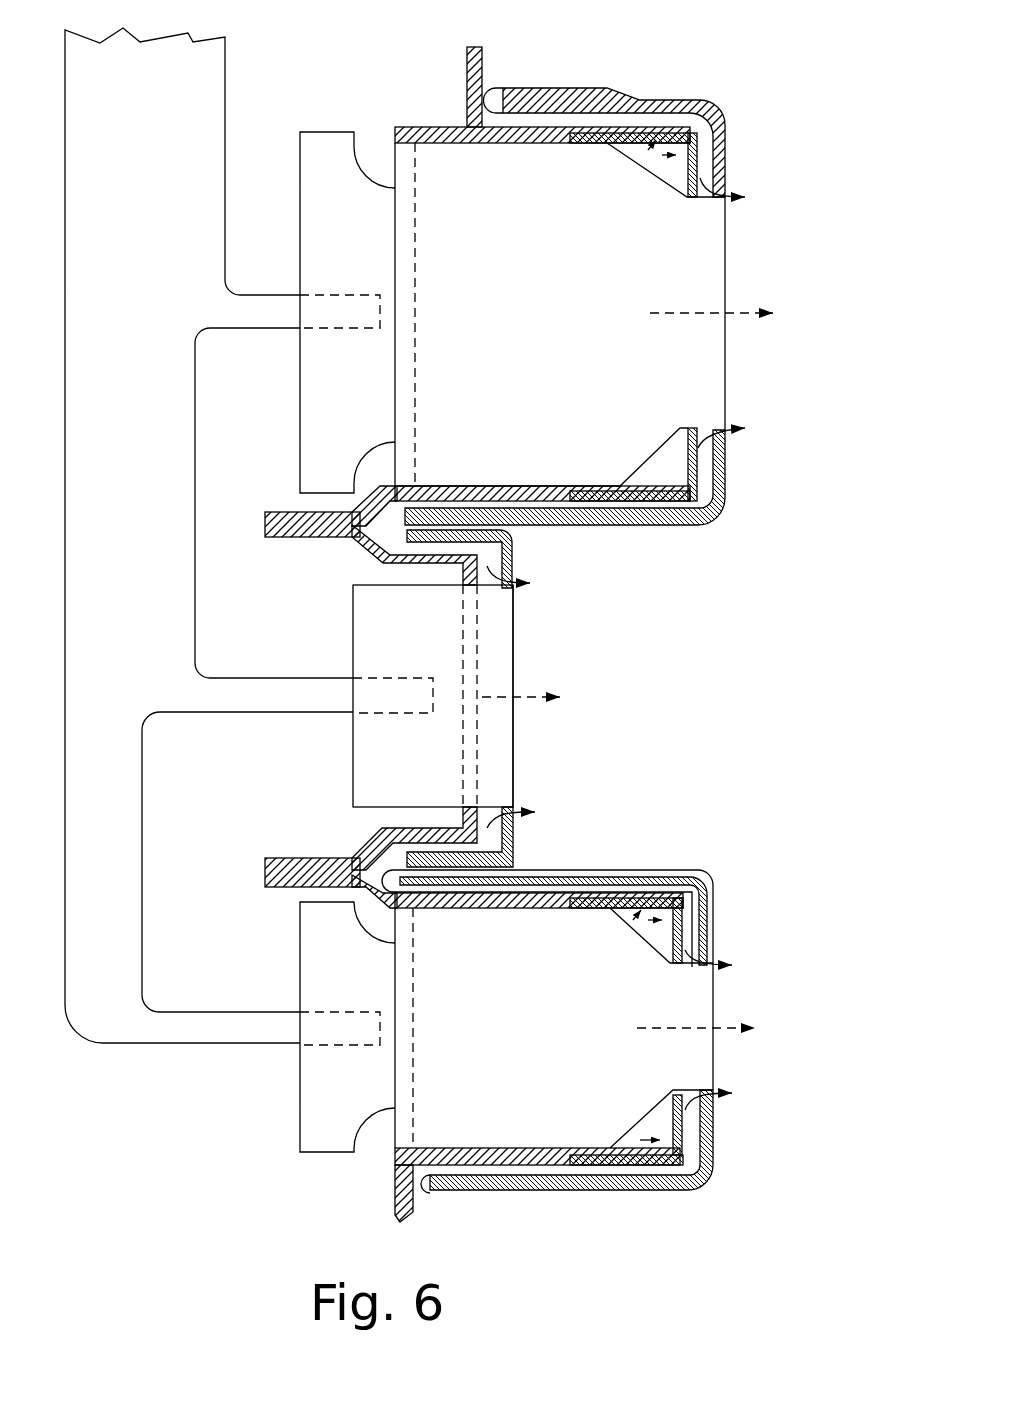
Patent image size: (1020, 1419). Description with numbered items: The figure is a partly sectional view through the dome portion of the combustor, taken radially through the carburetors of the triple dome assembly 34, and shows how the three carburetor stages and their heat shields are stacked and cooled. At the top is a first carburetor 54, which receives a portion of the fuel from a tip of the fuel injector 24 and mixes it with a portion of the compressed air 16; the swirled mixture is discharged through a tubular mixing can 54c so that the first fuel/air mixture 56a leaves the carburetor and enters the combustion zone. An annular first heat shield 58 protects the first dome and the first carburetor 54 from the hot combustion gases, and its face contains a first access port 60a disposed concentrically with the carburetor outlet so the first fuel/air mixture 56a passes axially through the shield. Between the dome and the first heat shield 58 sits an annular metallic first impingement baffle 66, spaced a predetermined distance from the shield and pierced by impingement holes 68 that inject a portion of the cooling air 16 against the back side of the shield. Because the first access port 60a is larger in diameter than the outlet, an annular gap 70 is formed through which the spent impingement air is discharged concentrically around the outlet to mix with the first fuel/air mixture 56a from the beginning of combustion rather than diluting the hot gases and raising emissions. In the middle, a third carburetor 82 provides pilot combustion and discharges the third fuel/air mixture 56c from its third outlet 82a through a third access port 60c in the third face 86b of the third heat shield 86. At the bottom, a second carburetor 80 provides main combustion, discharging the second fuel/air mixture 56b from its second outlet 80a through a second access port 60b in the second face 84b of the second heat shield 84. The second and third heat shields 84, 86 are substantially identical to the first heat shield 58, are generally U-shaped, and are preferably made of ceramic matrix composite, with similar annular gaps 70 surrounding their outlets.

The fuel injector 24 is at (232, 109).
The dome assembly 34 is at (417, 125).
The first carburetor 54 is at (602, 274).
The mixing can 54c is at (705, 252).
The first fuel/air mixture 56a is at (740, 318).
The first heat shield 58 is at (674, 100).
The first access port 60a is at (722, 450).
The second access port 60b is at (713, 958).
The third access port 60c is at (528, 583).
The compressed air 16 is at (742, 432).
The first impingement baffle 66 is at (650, 483).
The impingement hole 68 is at (690, 182).
The annular gap 70 is at (722, 194).
The second carburetor 80 is at (595, 1057).
The second outlet 80a is at (713, 1062).
The third carburetor 82 is at (473, 696).
The third outlet 82a is at (513, 632).
The second heat shield 84 is at (586, 1005).
The second face 84b is at (713, 910).
The third heat shield 86 is at (518, 548).
The third face 86b is at (514, 843).
The second fuel/air mixture 56b is at (740, 1028).
The third fuel/air mixture 56c is at (530, 700).